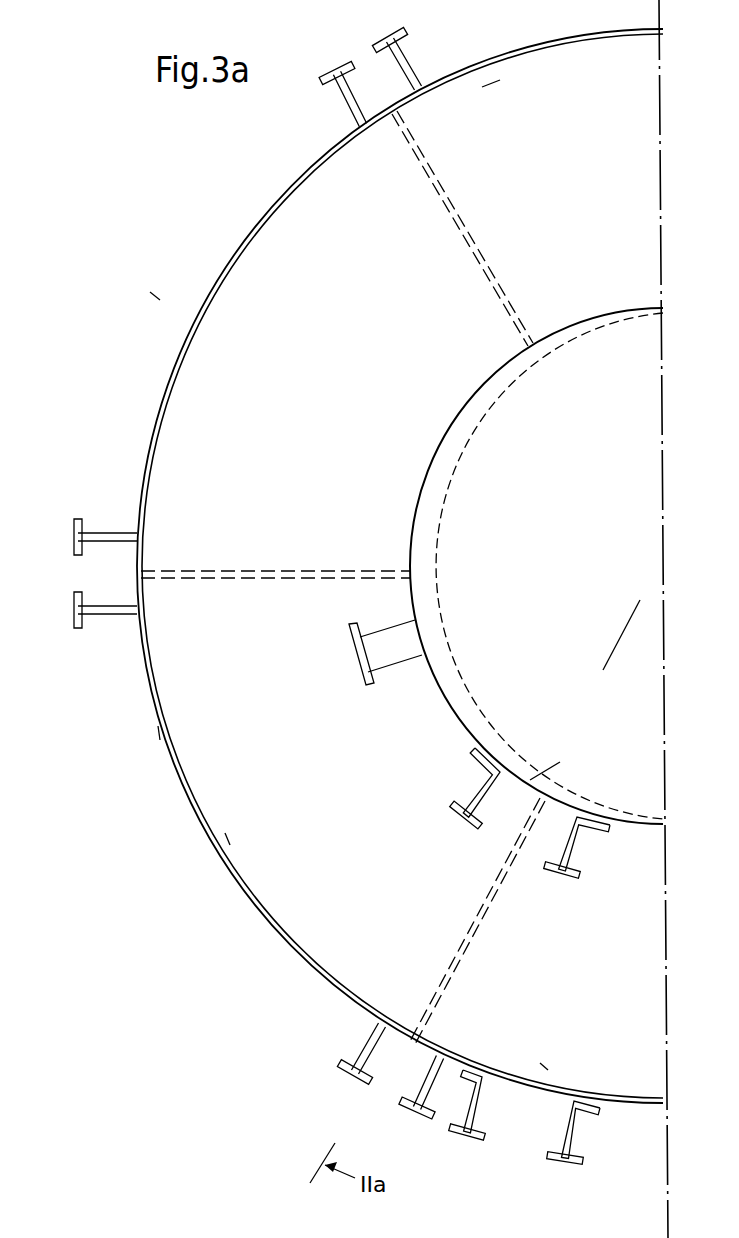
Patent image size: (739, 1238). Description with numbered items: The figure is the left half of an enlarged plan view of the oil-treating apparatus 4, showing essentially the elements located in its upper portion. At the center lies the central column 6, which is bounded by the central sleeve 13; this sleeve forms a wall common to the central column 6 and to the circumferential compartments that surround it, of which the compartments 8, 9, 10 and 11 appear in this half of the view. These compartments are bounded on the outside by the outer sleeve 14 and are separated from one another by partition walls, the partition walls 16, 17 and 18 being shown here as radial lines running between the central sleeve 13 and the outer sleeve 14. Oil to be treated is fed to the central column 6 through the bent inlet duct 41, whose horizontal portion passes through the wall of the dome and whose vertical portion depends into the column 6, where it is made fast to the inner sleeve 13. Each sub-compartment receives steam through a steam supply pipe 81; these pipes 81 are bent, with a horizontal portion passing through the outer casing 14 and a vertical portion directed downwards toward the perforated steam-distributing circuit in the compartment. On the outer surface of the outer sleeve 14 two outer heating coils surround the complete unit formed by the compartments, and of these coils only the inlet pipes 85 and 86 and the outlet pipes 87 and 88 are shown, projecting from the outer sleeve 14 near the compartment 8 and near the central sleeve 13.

The vessel 4 is at (150, 290).
The central column 6 is at (620, 474).
The circumferential compartment 8 is at (540, 1063).
The circumferential compartment 9 is at (225, 833).
The circumferential compartment 10 is at (207, 424).
The circumferential compartment 11 is at (482, 87).
The central sleeve 13 is at (530, 780).
The outer sleeve 14 is at (158, 726).
The partition wall 16 is at (450, 955).
The partition wall 17 is at (258, 568).
The partition wall 18 is at (478, 268).
The inlet duct 41 is at (362, 678).
The steam supply pipe 81 is at (380, 43).
The inlet pipe 85 is at (465, 1133).
The inlet pipe 86 is at (567, 1140).
The outlet pipe 87 is at (575, 855).
The outlet pipe 88 is at (450, 808).